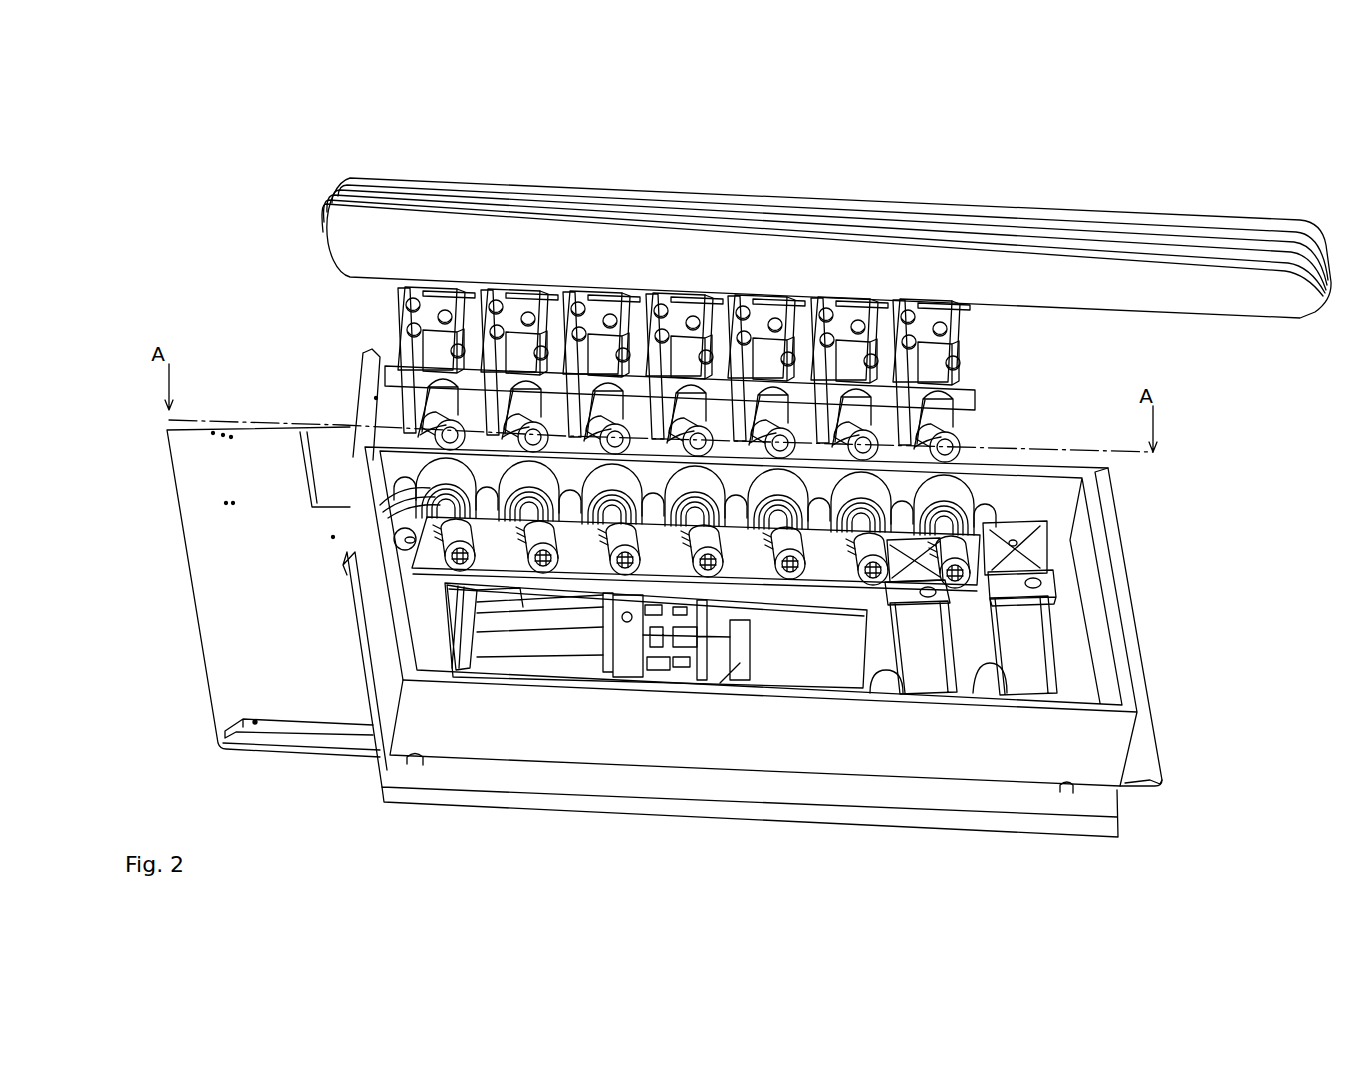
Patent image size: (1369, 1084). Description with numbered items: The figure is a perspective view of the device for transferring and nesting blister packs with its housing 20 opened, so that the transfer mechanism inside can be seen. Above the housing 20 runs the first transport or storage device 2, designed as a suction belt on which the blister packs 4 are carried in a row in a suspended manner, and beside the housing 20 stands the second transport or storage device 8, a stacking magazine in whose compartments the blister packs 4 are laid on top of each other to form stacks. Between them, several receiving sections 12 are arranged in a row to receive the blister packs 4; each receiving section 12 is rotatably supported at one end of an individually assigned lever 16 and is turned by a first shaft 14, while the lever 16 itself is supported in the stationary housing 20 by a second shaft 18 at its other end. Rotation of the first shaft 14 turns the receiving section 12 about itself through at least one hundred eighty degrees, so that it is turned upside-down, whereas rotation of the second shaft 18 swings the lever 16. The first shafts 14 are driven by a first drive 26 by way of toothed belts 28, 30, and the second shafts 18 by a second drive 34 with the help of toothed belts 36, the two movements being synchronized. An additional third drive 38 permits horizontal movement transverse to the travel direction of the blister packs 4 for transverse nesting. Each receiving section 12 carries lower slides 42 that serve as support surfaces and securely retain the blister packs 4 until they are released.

The first transport or storage device 2 is at (822, 268).
The blister packs 4 is at (920, 337).
The second transport or storage device 8 is at (367, 383).
The receiving section 12 is at (580, 380).
The first shaft 14 is at (697, 443).
The lever 16 is at (940, 418).
The second shaft 18 is at (546, 567).
The housing 20 is at (1060, 745).
The first drive 26 is at (1025, 630).
The toothed belt 28 is at (383, 503).
The toothed belt 30 is at (443, 415).
The second drive 34 is at (1053, 583).
The toothed belt 36 is at (387, 525).
The third drive 38 is at (630, 657).
The lower slide 42 is at (933, 372).